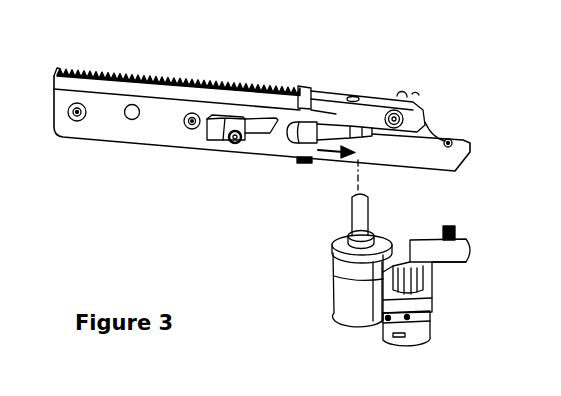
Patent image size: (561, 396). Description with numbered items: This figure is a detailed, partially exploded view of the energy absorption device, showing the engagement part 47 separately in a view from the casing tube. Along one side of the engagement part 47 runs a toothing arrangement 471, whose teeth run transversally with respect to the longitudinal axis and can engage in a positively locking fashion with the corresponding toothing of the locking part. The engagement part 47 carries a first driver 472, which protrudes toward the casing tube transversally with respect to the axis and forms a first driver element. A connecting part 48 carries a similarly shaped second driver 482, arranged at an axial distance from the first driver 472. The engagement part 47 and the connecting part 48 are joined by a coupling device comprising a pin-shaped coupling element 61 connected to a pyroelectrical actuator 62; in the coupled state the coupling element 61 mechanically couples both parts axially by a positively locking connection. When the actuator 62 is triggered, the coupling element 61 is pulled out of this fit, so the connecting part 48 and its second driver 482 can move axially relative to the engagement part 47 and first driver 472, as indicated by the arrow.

The engagement part 47 is at (259, 60).
The toothing arrangement 471 is at (165, 75).
The first driver 472 is at (220, 132).
The connecting part 48 is at (334, 134).
The second driver 482 is at (301, 139).
The coupling element 61 is at (358, 214).
The pyroelectrical actuator 62 is at (358, 302).